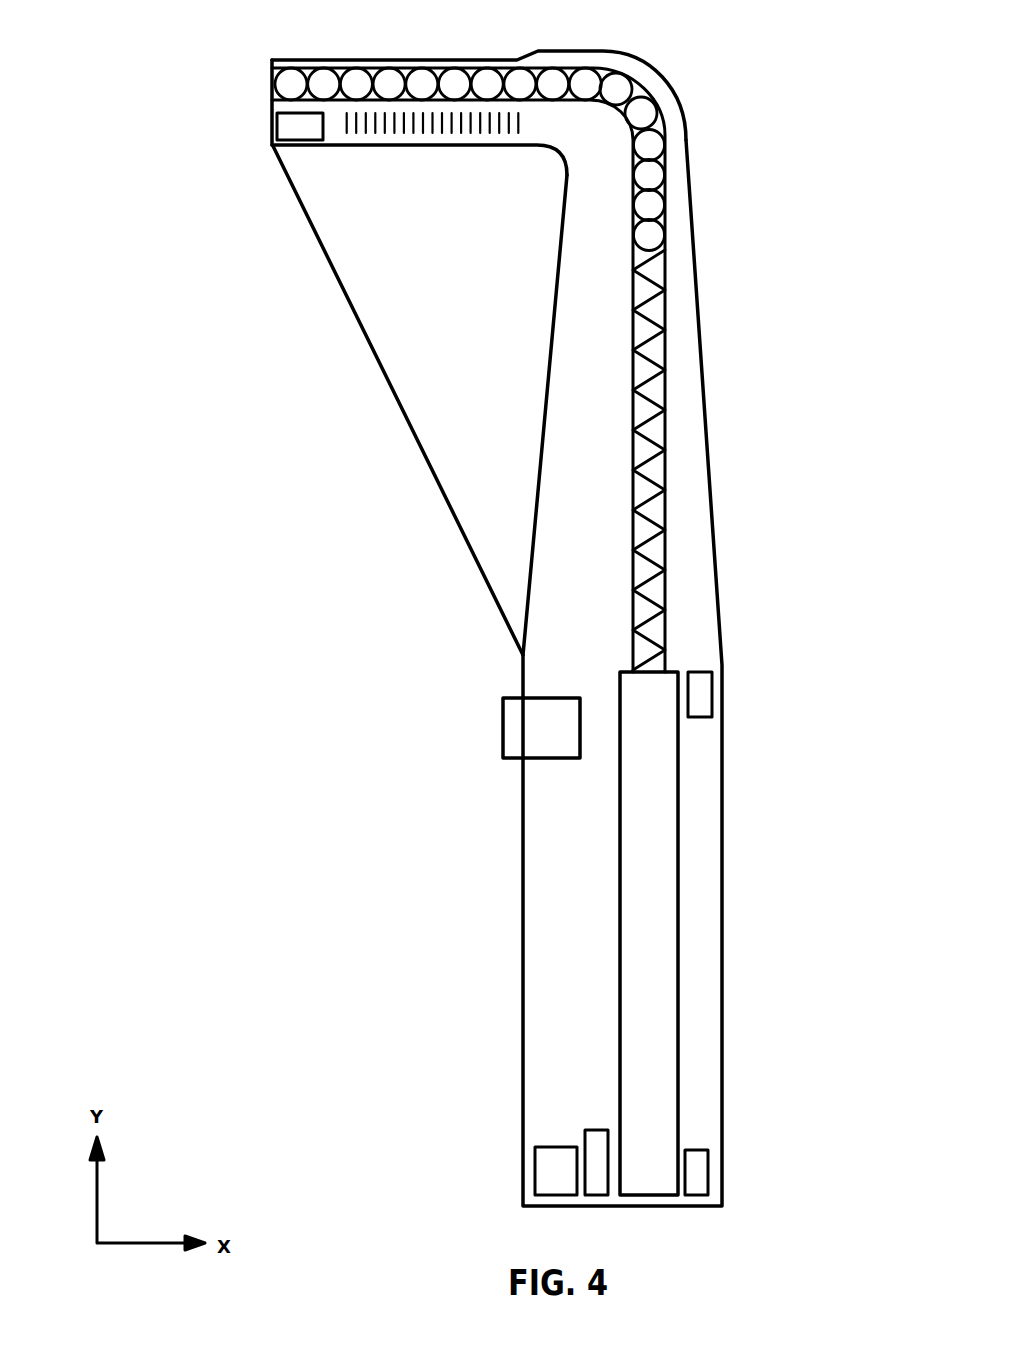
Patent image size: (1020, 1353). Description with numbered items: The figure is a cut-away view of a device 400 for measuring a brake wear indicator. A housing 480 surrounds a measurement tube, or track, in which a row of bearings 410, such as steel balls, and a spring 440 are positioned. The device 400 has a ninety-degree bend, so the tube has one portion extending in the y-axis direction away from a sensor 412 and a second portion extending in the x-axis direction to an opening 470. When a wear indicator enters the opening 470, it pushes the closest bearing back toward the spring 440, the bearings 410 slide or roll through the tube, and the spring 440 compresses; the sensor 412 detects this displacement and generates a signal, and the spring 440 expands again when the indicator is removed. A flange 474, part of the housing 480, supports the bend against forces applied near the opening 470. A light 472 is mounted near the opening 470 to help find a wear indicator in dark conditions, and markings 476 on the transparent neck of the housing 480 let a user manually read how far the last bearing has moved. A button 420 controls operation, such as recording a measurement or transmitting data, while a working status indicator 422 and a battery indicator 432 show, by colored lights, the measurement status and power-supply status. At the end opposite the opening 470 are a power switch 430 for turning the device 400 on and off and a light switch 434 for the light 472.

The device 400 is at (195, 940).
The bearings 410 is at (667, 162).
The sensor 412 is at (620, 859).
The button 420 is at (503, 699).
The working status indicator 422 is at (712, 690).
The power switch 430 is at (535, 1177).
The battery indicator 432 is at (600, 1196).
The light switch 434 is at (708, 1177).
The spring 440 is at (667, 380).
The opening 470 is at (222, 52).
The light 472 is at (276, 125).
The flange 474 is at (401, 414).
The markings 476 is at (460, 178).
The housing 480 is at (593, 50).